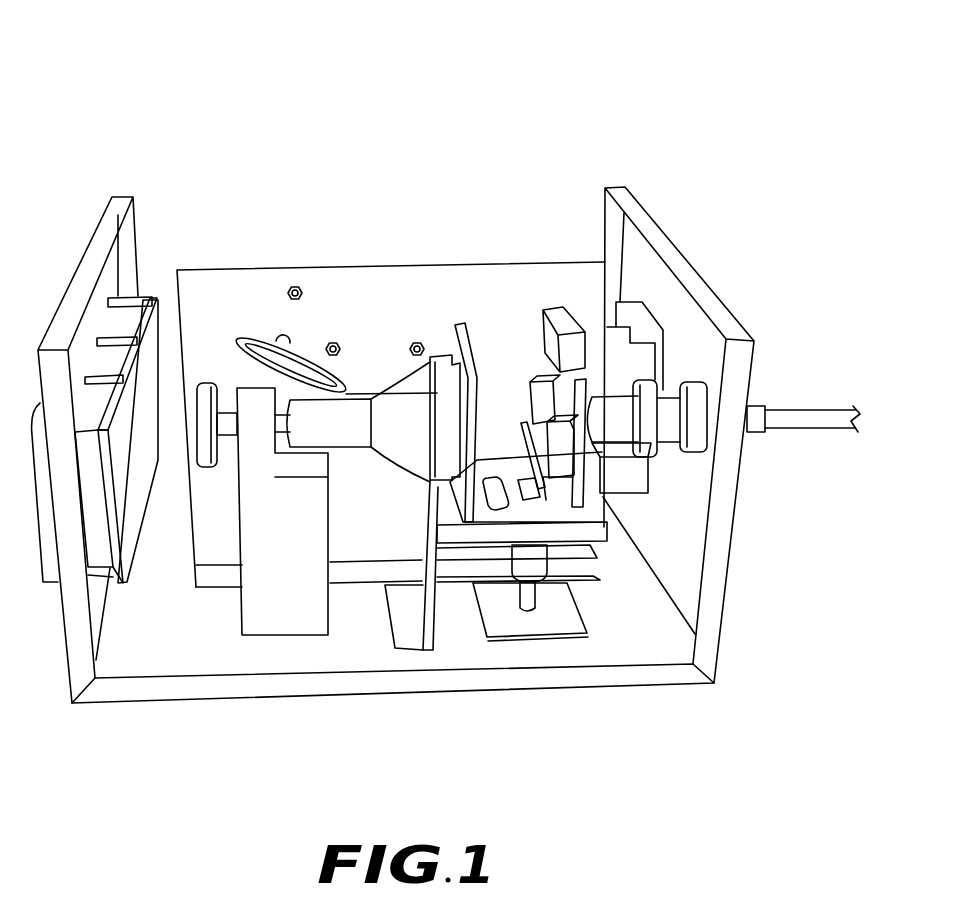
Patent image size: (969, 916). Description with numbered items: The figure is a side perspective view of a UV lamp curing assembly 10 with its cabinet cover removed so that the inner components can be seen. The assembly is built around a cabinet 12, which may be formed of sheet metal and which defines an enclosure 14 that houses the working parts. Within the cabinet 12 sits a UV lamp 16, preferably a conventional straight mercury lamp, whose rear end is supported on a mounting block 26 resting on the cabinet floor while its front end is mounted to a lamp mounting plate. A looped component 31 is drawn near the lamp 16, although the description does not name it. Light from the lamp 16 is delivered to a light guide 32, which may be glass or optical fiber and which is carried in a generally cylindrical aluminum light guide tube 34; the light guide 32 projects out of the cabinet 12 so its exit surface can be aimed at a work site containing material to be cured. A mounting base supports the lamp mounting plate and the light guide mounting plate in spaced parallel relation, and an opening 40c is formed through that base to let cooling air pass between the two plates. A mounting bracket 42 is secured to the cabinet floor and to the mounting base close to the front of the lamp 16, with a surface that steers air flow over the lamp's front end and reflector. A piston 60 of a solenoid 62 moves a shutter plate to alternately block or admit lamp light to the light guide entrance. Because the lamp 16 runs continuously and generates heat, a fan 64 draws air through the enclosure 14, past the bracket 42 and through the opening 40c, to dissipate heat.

The UV lamp curing assembly 10 is at (479, 110).
The cabinet 12 is at (188, 690).
The enclosure 14 is at (203, 662).
The UV lamp 16 is at (353, 413).
The mounting block 26 is at (287, 608).
The wire loop 31 is at (258, 340).
The light guide 32 is at (802, 420).
The light guide tube 34 is at (677, 402).
The opening 40c is at (495, 492).
The mounting bracket 42 is at (410, 640).
The piston 60 is at (530, 598).
The solenoid 62 is at (540, 570).
The fan 64 is at (128, 362).